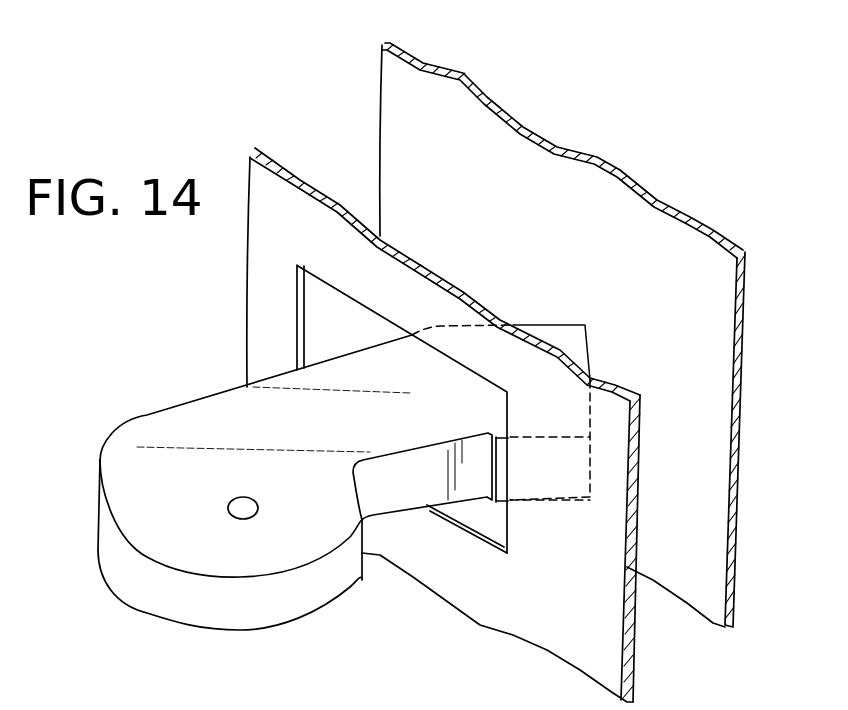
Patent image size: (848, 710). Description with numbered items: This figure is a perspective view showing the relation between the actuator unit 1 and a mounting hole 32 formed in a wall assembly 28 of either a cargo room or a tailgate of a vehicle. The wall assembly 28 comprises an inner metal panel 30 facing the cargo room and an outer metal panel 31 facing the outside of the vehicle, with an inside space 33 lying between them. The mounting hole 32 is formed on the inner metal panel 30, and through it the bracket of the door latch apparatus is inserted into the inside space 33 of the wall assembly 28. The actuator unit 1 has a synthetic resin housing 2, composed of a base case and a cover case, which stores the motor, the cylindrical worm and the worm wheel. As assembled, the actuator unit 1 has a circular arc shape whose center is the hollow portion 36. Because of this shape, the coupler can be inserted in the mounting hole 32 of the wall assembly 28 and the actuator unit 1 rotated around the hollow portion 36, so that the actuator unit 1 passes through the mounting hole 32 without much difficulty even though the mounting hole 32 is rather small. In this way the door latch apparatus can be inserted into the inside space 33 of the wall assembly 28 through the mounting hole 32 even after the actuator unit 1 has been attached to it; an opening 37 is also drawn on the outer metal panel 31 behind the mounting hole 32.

The actuator unit 1 is at (158, 432).
The housing 2 is at (288, 593).
The wall assembly 28 is at (375, 30).
The inner metal panel 30 is at (473, 567).
The outer metal panel 31 is at (700, 490).
The mounting hole 32 is at (317, 310).
The inside space 33 is at (660, 623).
The hollow portion 36 is at (408, 487).
The opening in rear wall panel 37 is at (572, 337).